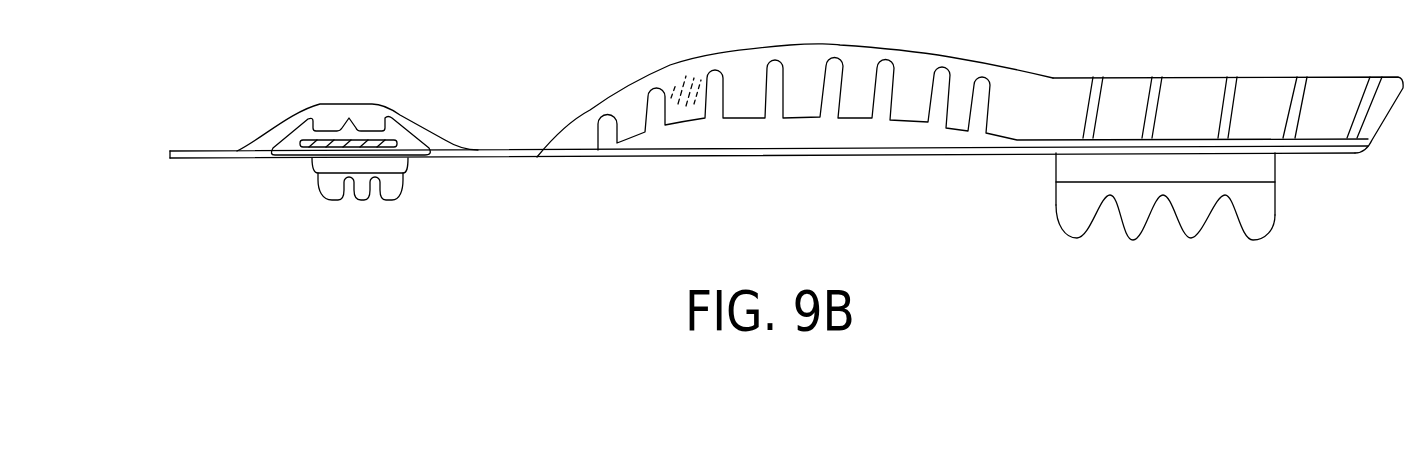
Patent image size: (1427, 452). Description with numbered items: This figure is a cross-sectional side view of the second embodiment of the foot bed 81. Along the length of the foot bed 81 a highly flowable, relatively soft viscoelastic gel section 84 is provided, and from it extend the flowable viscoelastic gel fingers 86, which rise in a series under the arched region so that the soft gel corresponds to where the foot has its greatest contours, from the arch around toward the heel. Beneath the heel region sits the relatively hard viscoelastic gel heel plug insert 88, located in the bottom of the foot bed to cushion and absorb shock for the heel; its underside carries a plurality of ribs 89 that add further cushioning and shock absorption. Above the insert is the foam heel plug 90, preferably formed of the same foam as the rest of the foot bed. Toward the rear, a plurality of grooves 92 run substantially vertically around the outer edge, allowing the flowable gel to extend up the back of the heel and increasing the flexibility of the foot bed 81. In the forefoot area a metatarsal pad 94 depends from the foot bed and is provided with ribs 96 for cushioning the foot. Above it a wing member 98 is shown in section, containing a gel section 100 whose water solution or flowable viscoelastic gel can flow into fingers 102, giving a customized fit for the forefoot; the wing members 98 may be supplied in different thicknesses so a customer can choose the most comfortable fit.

The foot bed 81 is at (1097, 71).
The viscoelastic gel section 84 is at (747, 137).
The viscoelastic gel fingers 86 is at (723, 80).
The viscoelastic gel heel plug insert 88 is at (1056, 205).
The ribs 89 is at (1135, 238).
The foam heel plug 90 is at (1056, 163).
The grooves 92 is at (1158, 108).
The metatarsal pad 94 is at (322, 183).
The ribs 96 is at (338, 205).
The wing members 98 is at (287, 120).
The gel sections 100 is at (390, 140).
The fingers 102 is at (387, 120).